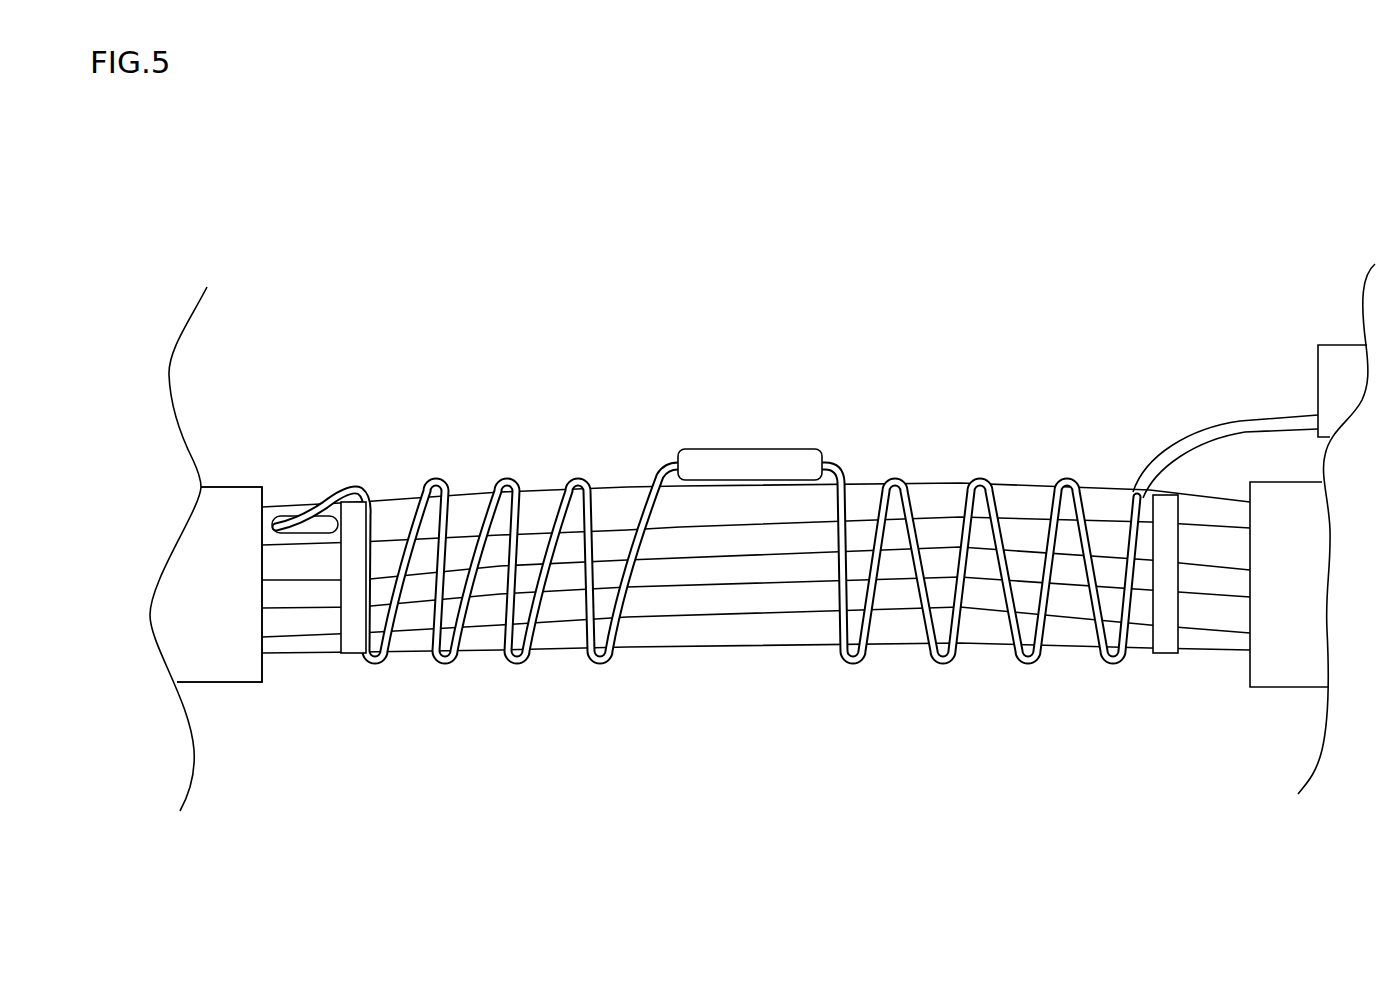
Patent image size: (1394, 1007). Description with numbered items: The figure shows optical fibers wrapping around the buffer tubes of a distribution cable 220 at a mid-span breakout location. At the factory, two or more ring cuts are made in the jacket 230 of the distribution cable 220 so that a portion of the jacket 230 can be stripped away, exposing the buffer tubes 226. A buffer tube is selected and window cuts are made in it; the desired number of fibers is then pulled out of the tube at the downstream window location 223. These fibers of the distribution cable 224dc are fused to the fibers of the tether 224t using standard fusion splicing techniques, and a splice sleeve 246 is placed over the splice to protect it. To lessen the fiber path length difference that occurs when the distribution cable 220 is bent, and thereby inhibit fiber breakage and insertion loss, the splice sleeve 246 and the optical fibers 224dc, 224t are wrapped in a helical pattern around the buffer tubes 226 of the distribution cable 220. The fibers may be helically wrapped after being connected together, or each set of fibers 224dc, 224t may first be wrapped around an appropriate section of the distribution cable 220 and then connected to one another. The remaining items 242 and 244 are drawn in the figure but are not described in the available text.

The distribution cable 220 is at (225, 670).
The downstream window location 223 is at (281, 522).
The optical fibers of the distribution cable 224dc is at (437, 484).
The optical fibers of the tether 224t is at (988, 478).
The buffer tubes 226 is at (313, 643).
The jacket 230 is at (226, 500).
The terminal 242 is at (1324, 350).
The sensor assembly 244 is at (706, 396).
The splice sleeve 246 is at (780, 458).